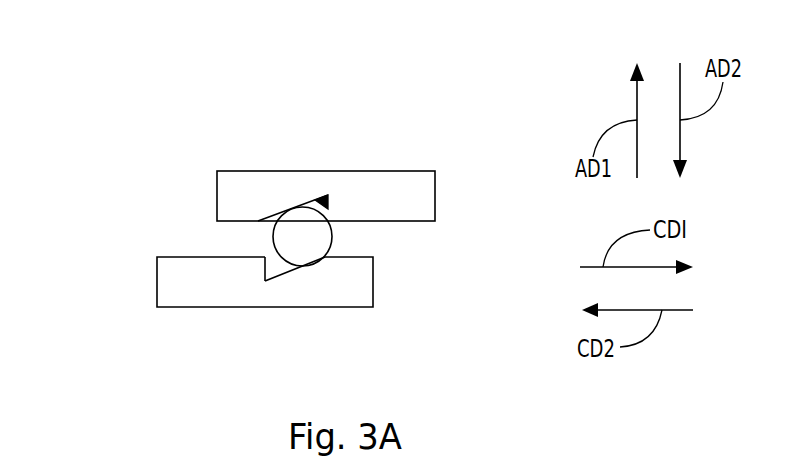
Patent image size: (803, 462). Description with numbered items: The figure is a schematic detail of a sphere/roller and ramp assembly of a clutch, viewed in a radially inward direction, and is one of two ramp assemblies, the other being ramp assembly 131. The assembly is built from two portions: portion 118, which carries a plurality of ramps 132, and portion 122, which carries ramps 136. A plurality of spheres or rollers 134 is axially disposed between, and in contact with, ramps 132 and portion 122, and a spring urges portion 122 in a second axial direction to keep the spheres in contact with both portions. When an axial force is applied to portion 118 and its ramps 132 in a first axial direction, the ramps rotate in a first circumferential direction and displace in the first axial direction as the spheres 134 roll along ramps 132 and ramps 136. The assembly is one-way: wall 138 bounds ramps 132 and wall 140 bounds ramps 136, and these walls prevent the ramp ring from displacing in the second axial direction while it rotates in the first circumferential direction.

The portion 118 is at (150, 290).
The portion 122 is at (382, 164).
The ramp assembly 131 is at (494, 133).
The ramps 132 is at (298, 267).
The spheres or rollers 134 is at (332, 236).
The ramps 136 is at (316, 201).
The wall 138 is at (265, 280).
The wall 140 is at (317, 199).